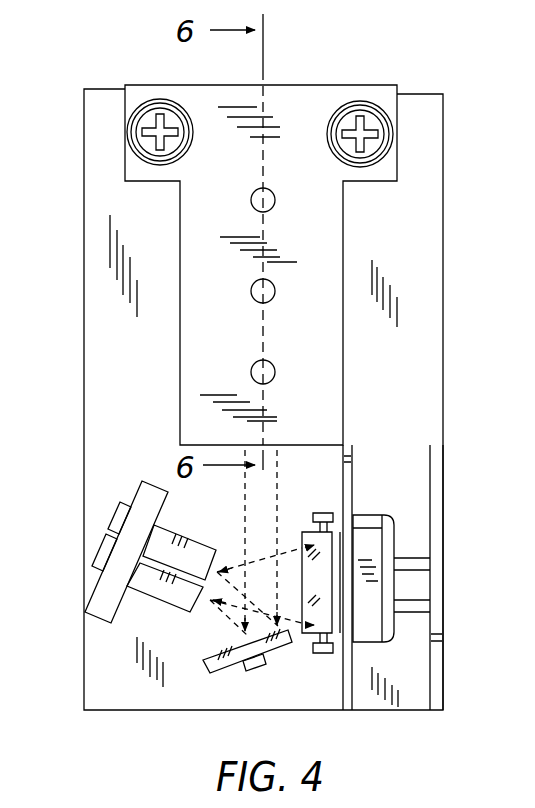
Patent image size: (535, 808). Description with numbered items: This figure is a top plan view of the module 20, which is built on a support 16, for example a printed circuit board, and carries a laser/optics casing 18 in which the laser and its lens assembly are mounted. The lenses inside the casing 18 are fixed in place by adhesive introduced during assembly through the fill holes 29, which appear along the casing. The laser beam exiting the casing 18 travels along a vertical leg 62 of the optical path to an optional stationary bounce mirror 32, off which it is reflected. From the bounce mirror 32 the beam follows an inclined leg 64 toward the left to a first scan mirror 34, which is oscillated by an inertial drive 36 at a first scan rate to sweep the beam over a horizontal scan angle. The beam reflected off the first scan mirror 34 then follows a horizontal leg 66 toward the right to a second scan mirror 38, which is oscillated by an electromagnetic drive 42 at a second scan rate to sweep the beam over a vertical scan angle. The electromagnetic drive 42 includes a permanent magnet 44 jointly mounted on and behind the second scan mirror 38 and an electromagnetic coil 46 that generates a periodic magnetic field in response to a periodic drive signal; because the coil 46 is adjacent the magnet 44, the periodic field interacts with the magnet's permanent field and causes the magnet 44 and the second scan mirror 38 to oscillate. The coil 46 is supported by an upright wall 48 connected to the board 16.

The support 16 is at (432, 232).
The laser/optics casing 18 is at (285, 96).
The module 20 is at (438, 84).
The fill holes 29 is at (250, 291).
The stationary bounce mirror 32 is at (233, 667).
The first scan mirror 34 is at (226, 616).
The inertial drive 36 is at (123, 619).
The second scan mirror 38 is at (307, 645).
The electromagnetic drive 42 is at (399, 614).
The permanent magnet 44 is at (343, 622).
The electromagnetic coil 46 is at (362, 520).
The upright wall 48 is at (436, 483).
The vertical leg 62 is at (259, 509).
The inclined leg 64 is at (212, 580).
The horizontal leg 66 is at (287, 562).